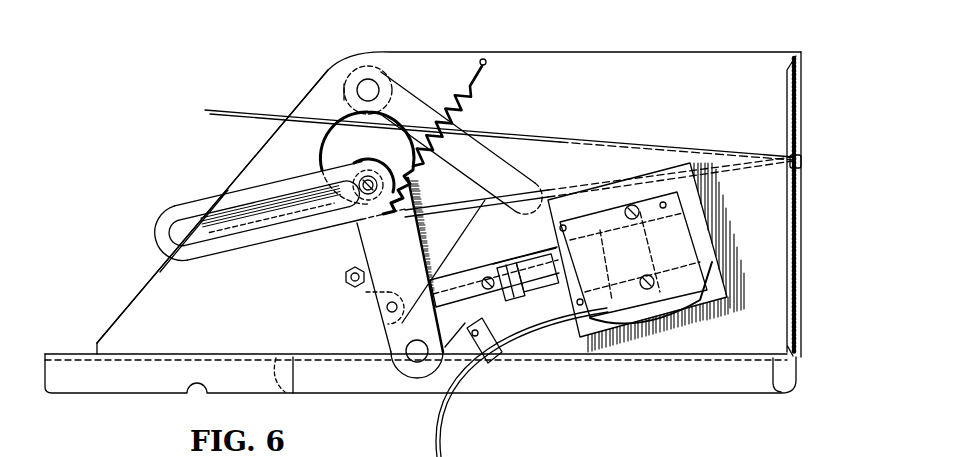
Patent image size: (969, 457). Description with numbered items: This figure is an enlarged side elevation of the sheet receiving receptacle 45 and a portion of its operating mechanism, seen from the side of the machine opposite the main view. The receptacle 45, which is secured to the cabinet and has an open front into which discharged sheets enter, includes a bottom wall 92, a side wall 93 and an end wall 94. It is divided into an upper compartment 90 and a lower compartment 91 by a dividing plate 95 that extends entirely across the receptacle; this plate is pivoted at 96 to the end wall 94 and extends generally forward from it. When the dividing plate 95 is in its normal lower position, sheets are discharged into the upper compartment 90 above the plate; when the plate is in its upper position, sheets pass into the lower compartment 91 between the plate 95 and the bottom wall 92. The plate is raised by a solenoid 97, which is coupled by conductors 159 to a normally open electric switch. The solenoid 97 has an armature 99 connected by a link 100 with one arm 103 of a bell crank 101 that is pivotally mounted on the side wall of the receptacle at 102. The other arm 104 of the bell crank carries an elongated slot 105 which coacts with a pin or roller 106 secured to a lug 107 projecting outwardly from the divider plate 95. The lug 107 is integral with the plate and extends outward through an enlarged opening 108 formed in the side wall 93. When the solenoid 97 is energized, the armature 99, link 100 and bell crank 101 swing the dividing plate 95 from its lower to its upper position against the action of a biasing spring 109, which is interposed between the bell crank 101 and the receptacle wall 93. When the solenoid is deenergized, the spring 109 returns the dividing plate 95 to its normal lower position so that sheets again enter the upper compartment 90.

The receptacle 45 is at (592, 51).
The upper compartment 90 is at (739, 68).
The lower compartment 91 is at (147, 288).
The bottom wall 92 is at (74, 352).
The side wall 93 is at (194, 253).
The end wall 94 is at (806, 66).
The dividing plate 95 is at (582, 189).
The pivot 96 is at (806, 164).
The solenoid 97 is at (687, 224).
The armature 99 is at (532, 262).
The link 100 is at (463, 286).
The bell crank 101 is at (378, 293).
The pivot 102 is at (410, 358).
The arm 103 is at (421, 278).
The arm 104 is at (192, 209).
The elongated slot 105 is at (286, 201).
The pin or roller 106 is at (368, 166).
The lug 107 is at (348, 240).
The enlarged opening 108 is at (328, 120).
The biasing spring 109 is at (474, 98).
The conductors 159 is at (440, 428).